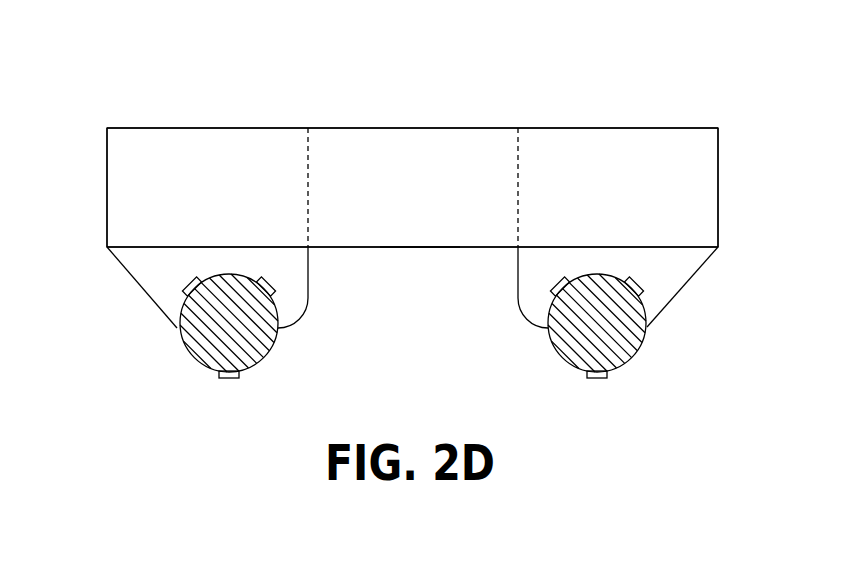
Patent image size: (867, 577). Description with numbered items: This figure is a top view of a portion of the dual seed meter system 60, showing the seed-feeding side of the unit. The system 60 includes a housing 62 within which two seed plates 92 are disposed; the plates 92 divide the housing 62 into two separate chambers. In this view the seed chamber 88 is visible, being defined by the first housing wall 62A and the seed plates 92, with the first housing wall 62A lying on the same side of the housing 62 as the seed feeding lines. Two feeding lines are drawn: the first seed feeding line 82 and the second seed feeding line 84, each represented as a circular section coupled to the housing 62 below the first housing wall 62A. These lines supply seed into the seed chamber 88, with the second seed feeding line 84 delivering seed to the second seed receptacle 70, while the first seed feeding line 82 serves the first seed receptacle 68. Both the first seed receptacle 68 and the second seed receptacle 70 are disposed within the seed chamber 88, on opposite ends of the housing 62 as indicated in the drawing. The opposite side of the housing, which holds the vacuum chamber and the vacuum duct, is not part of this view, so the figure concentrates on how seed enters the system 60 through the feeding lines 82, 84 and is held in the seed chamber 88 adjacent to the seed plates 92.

The seed meter system 60 is at (140, 110).
The housing 62 is at (107, 203).
The first housing wall 62A is at (385, 247).
The first seed receptacle 68 is at (134, 167).
The second seed receptacle 70 is at (692, 167).
The first seed feeding line 82 is at (280, 346).
The second seed feeding line 84 is at (548, 346).
The seed chamber 88 is at (420, 225).
The seed plates 92 is at (358, 127).